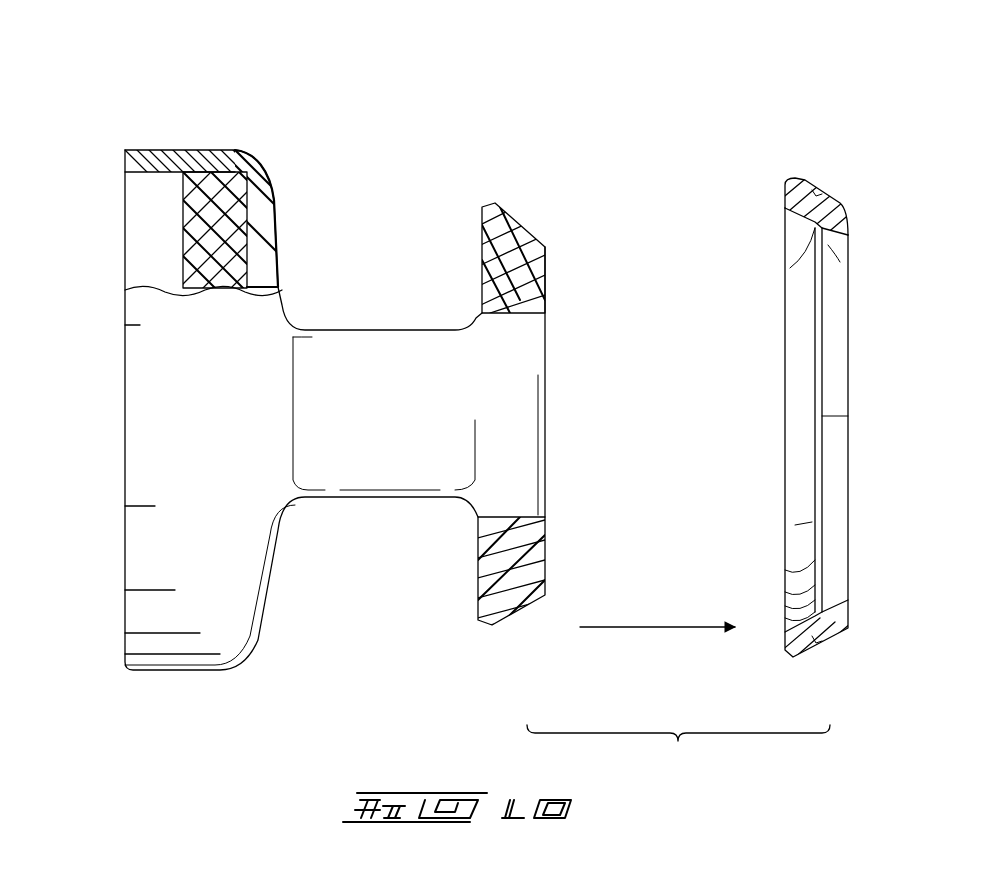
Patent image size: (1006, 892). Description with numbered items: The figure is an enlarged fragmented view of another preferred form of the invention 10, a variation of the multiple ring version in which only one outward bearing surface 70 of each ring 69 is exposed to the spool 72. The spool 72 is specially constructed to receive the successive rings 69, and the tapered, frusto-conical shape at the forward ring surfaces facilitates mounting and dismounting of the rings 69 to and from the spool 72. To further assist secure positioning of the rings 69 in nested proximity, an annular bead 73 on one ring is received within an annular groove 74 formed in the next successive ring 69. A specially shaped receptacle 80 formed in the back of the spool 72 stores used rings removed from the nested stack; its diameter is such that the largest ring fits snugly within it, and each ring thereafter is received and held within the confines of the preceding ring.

The shaft seal assembly 10 is at (858, 97).
The ring 69 is at (180, 188).
The outward bearing surface 70 is at (485, 207).
The spool 72 is at (278, 215).
The annular bead 73 is at (815, 225).
The annular groove 74 is at (815, 642).
The receptacle 80 is at (150, 173).